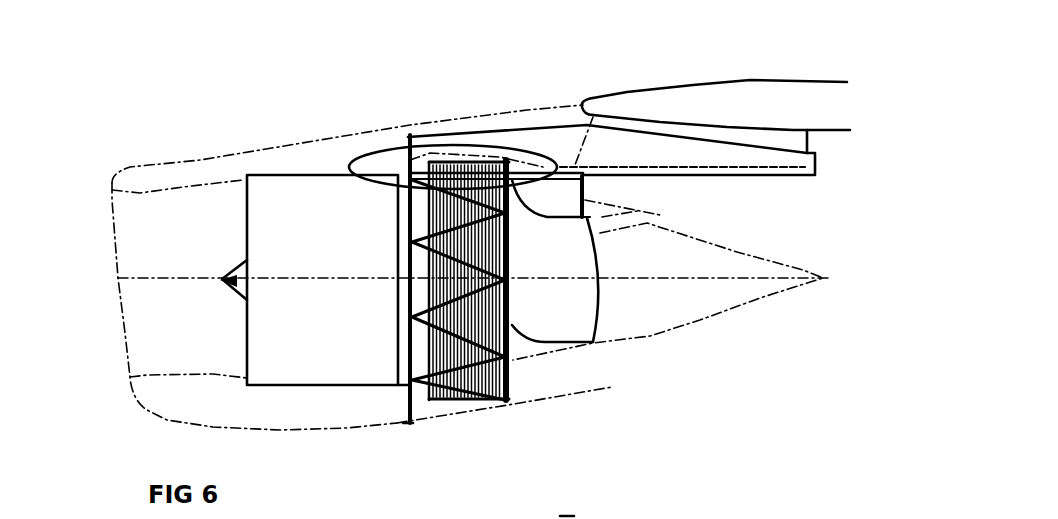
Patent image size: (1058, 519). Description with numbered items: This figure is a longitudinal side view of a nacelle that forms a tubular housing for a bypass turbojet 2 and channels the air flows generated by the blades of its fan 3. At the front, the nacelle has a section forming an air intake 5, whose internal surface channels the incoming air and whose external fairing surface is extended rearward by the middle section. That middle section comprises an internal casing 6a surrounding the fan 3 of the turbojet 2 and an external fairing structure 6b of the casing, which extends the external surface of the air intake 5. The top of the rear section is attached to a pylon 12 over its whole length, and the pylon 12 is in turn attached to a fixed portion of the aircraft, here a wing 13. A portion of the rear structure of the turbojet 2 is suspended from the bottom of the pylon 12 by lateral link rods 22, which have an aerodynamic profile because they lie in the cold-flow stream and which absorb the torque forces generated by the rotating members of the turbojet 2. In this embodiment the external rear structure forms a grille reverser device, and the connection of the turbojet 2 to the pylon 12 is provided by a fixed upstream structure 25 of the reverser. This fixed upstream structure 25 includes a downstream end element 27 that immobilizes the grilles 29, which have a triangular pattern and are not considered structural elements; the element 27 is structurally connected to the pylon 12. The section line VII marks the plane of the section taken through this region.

The bypass turbojet 2 is at (587, 317).
The fan 3 is at (222, 281).
The air intake 5 is at (124, 168).
The internal casing 6a is at (287, 168).
The external fairing structure 6b is at (307, 423).
The section line VII is at (394, 142).
The pylon 12 is at (558, 130).
The wing 13 is at (776, 92).
The lateral link rods 22 is at (598, 189).
The fixed upstream structure 25 is at (522, 437).
The downstream end element 27 is at (528, 350).
The grilles 29 is at (515, 392).